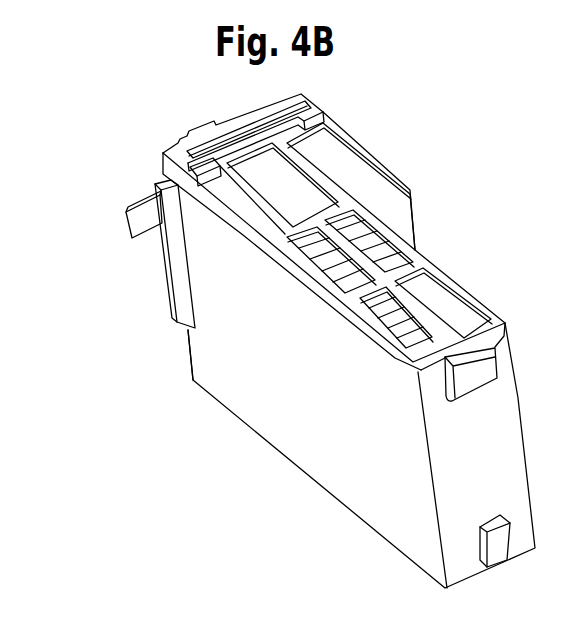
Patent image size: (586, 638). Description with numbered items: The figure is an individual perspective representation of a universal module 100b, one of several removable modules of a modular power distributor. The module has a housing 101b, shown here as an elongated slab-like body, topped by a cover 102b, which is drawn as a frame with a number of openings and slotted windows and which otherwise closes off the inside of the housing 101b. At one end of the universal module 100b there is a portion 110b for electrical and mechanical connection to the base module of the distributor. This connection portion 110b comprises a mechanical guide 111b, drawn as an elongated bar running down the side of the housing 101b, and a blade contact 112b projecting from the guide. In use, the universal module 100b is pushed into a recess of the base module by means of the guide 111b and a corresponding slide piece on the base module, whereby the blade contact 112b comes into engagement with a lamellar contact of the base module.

The universal module 100b is at (288, 473).
The housing 101b is at (368, 503).
The cover 102b is at (468, 290).
The portion for electrical and mechanical connection 110b is at (106, 279).
The mechanical guide 111b is at (162, 258).
The blade contact 112b is at (125, 223).